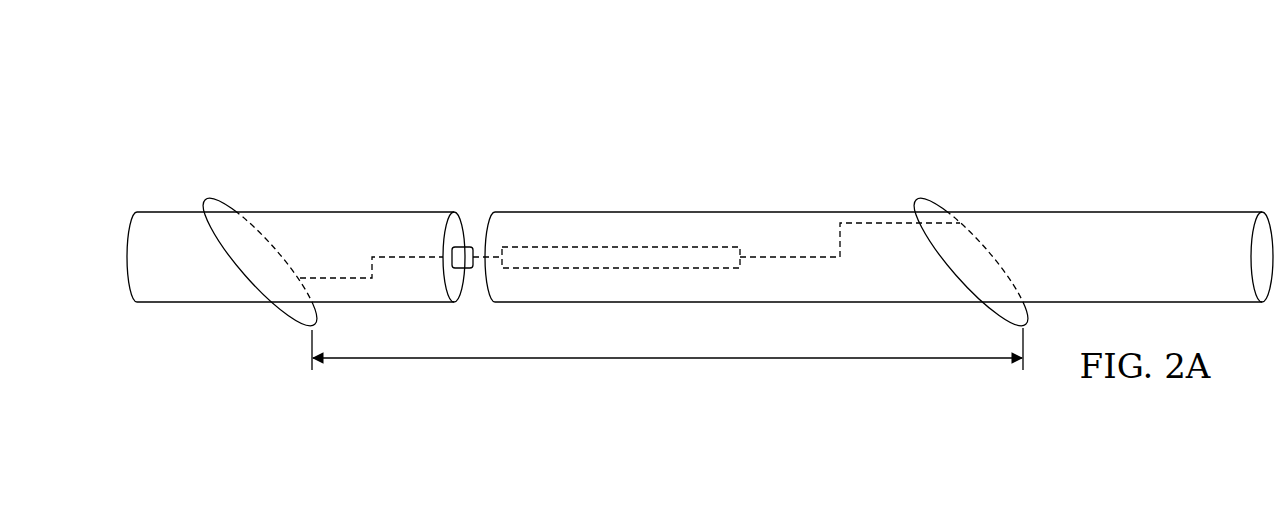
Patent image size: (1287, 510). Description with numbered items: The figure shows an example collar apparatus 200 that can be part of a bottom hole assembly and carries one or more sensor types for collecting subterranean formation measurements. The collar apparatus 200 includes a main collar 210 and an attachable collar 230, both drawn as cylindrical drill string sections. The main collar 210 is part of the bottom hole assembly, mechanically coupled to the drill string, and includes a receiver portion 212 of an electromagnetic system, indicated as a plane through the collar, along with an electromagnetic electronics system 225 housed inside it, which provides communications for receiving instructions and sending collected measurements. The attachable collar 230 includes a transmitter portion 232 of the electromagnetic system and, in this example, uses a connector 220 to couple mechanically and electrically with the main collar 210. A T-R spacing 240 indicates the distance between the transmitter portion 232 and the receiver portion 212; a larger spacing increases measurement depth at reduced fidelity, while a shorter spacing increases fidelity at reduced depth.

The collar apparatus 200 is at (460, 98).
The main collar 210 is at (1183, 212).
The receiver portion 212 is at (922, 200).
The connector 220 is at (470, 245).
The electromagnetic electronics system 225 is at (620, 247).
The attachable collar 230 is at (333, 212).
The transmitter portion 232 is at (208, 200).
The T-R spacing 240 is at (500, 362).